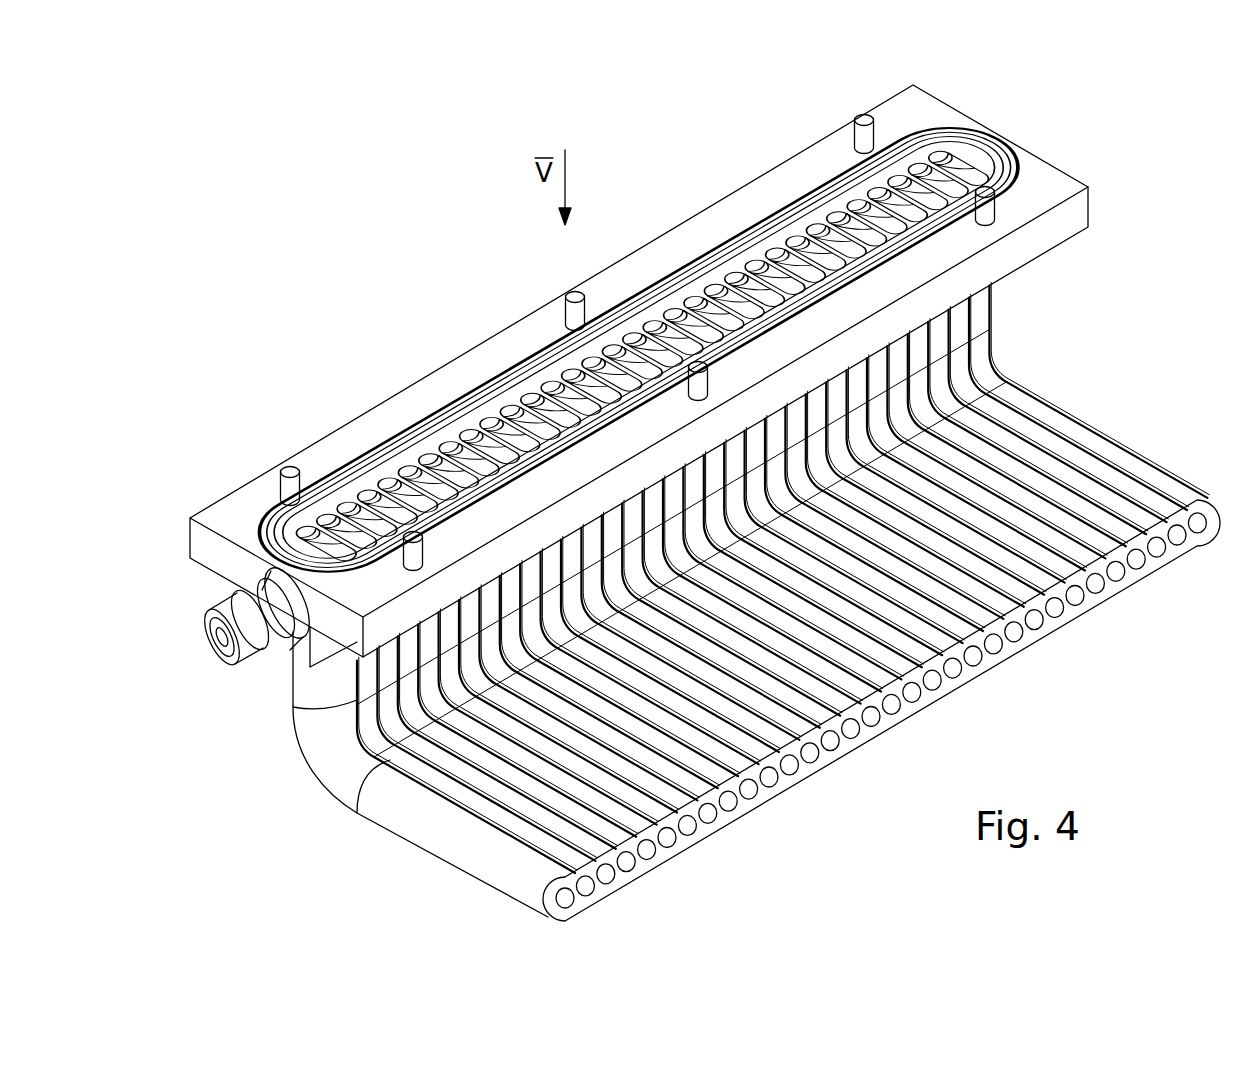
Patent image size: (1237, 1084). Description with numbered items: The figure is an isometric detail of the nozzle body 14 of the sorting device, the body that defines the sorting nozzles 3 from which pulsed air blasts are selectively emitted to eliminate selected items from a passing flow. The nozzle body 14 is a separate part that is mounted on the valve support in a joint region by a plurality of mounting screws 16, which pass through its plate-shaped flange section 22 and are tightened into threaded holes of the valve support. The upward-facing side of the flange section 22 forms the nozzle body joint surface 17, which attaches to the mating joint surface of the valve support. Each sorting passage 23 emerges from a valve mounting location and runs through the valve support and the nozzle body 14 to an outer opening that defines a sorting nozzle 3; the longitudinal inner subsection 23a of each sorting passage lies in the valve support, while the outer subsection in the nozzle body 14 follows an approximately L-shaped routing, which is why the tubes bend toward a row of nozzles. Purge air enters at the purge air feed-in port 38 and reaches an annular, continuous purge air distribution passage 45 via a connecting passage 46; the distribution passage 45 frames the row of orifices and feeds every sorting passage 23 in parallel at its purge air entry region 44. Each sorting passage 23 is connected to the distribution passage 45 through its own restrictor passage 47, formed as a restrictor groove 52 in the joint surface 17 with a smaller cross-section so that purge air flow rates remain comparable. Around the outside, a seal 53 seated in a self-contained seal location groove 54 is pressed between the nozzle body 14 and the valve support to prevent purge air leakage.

The nozzle body 14 is at (1108, 170).
The plate-shaped flange section 22 is at (1036, 244).
The mounting screws 16 is at (858, 128).
The nozzle body joint surface 17 is at (462, 386).
The sorting passage 23 is at (800, 305).
The longitudinal inner subsection 23a is at (877, 303).
The sorting nozzles 3 is at (1099, 593).
The purge air feed-in port 38 is at (210, 648).
The purge air entry region 44 is at (605, 412).
The purge air distribution passage 45 is at (638, 350).
The connecting passage 46 is at (722, 262).
The restrictor passage 47 is at (643, 355).
The restrictor groove 52 is at (525, 470).
The seal 53 is at (270, 512).
The seal location groove 54 is at (400, 440).